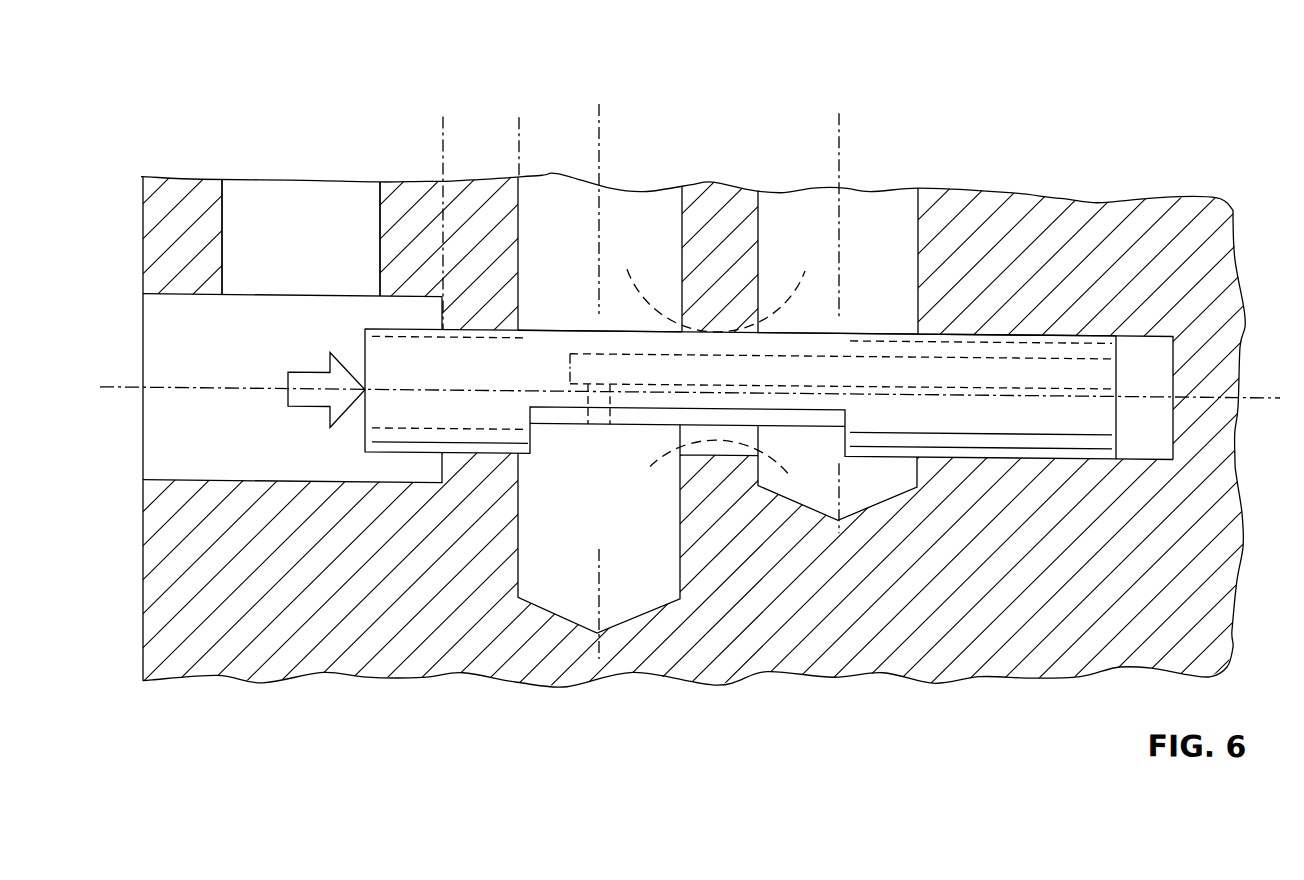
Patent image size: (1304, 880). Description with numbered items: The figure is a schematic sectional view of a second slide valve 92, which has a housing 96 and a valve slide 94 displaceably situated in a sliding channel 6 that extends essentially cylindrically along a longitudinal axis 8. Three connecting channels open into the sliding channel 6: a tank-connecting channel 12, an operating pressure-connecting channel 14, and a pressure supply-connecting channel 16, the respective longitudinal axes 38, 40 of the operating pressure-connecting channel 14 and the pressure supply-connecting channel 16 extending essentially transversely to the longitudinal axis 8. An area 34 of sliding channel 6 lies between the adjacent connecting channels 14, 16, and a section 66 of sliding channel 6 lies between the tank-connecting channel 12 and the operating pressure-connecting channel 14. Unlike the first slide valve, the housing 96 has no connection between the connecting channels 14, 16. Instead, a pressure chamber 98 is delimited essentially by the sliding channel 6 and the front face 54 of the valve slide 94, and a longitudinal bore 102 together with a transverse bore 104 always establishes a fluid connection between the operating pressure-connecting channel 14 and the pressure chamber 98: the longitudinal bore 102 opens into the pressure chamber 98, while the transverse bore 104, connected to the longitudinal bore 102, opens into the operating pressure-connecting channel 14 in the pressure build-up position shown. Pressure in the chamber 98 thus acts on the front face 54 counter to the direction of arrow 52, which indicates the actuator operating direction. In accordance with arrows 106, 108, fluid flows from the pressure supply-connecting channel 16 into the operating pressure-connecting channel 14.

The sliding channel 6 is at (1142, 334).
The longitudinal axis 8 is at (113, 394).
The tank-connecting channel 12 is at (298, 216).
The operating pressure-connecting channel 14 is at (563, 200).
The pressure supply-connecting channel 16 is at (803, 200).
The area of sliding channel 34 is at (758, 190).
The longitudinal axis 38 is at (600, 137).
The longitudinal axis 40 is at (839, 139).
The arrow 52 is at (317, 381).
The front face 54 is at (1122, 414).
The section of sliding channel 66 is at (443, 119).
The second slide valve 92 is at (1188, 117).
The valve slide 94 is at (1077, 436).
The housing 96 is at (1128, 236).
The pressure chamber 98 is at (1152, 441).
The longitudinal bore 102 is at (1055, 364).
The transverse bore 104 is at (598, 420).
The arrow 106 is at (628, 274).
The arrow 108 is at (632, 485).